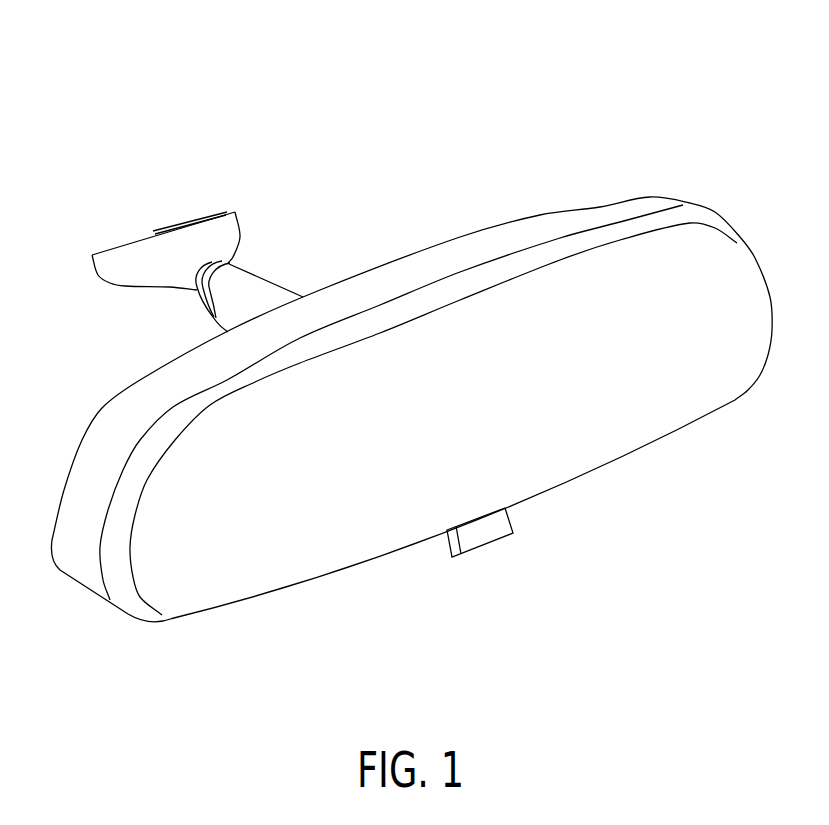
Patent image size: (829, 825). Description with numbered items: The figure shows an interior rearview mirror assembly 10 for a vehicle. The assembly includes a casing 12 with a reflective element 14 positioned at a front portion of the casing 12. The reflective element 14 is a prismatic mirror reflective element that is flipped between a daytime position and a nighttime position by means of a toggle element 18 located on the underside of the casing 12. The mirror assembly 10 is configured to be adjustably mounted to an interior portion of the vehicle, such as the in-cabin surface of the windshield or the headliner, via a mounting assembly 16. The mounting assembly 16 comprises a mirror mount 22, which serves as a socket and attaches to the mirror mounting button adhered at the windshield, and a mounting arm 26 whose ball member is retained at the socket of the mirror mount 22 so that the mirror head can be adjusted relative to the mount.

The interior rearview mirror assembly 10 is at (595, 105).
The casing 12 is at (412, 267).
The reflective element 14 is at (335, 483).
The mounting assembly 16 is at (252, 215).
The toggle element 18 is at (495, 568).
The mirror mount 22 is at (137, 255).
The mounting arm 26 is at (278, 288).